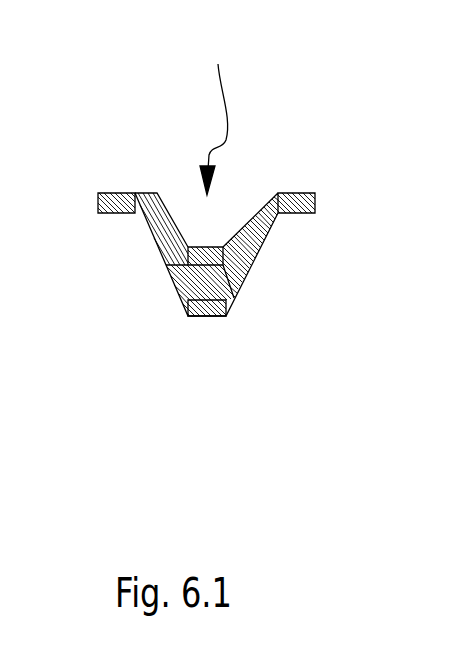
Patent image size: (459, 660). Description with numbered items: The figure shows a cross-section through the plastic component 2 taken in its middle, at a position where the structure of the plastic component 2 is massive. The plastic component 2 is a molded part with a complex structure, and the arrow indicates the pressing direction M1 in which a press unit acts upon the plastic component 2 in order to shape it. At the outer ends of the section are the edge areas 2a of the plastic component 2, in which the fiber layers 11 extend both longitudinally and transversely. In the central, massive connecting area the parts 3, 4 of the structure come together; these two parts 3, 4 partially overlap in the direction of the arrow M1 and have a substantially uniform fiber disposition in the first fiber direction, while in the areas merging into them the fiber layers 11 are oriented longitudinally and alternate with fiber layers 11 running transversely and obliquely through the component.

The plastic component 2 is at (274, 126).
The edge areas 2a is at (330, 179).
The structural part 3 is at (176, 270).
The structural part 4 is at (208, 316).
The fiber layers 11 is at (265, 274).
The pressing direction M1 is at (215, 108).